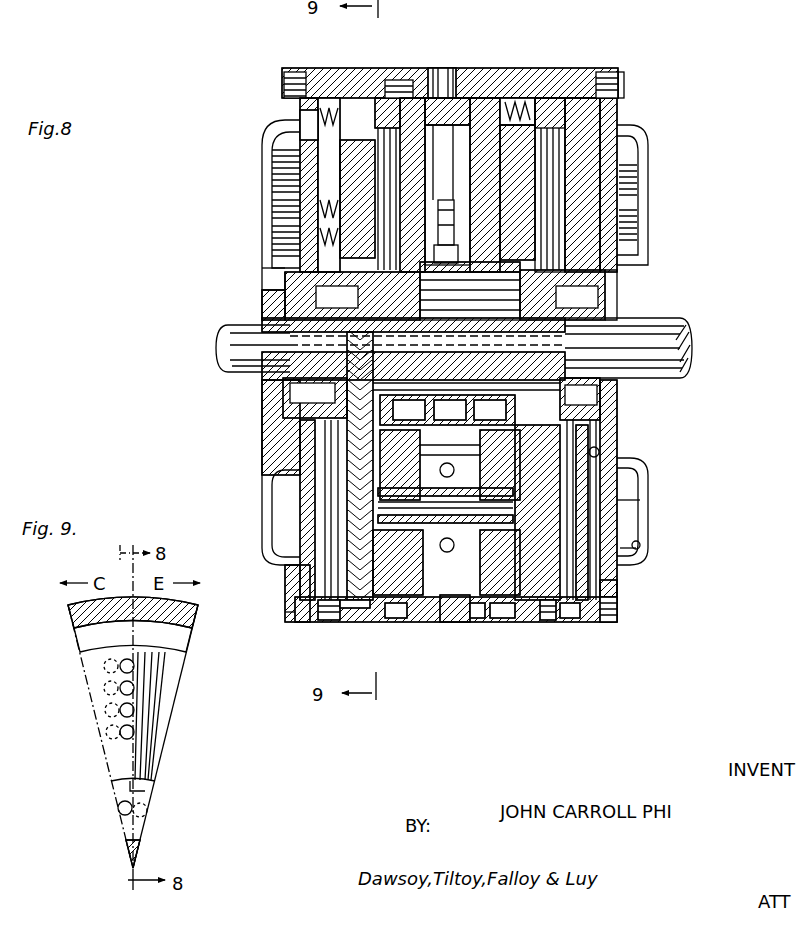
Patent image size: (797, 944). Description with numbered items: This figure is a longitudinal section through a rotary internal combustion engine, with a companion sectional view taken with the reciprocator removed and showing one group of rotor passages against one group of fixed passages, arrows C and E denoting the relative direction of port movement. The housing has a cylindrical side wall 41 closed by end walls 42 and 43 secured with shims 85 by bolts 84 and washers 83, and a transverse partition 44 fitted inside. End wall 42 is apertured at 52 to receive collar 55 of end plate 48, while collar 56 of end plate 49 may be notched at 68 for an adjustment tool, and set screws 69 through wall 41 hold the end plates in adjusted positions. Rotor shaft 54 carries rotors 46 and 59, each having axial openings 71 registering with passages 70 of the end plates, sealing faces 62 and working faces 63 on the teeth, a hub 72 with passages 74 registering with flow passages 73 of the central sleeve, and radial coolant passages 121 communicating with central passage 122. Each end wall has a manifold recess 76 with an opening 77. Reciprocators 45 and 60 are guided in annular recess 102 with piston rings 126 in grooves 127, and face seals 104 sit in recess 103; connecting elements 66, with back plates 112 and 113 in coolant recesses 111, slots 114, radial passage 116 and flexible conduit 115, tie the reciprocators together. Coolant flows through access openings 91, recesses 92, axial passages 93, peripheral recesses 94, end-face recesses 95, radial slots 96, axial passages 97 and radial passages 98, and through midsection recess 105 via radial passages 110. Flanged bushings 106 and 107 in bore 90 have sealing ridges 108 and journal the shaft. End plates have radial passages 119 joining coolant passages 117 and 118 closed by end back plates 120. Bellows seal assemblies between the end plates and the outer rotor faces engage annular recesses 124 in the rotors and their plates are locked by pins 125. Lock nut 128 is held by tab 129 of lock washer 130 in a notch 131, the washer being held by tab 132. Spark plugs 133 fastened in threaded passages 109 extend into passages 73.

In FIG. 8, the cylindrical side wall 41 is at (320, 82).
In FIG. 9, the cylindrical side wall 41 is at (72, 620).
In FIG. 8, the end wall 42 is at (650, 245).
In FIG. 8, the end wall 43 is at (272, 125).
In FIG. 8, the transverse partition 44 is at (482, 628).
In FIG. 8, the reciprocator 45 is at (530, 120).
In FIG. 8, the rotor 46 is at (570, 95).
In FIG. 8, the end plate 48 is at (615, 115).
In FIG. 8, the end plate 49 is at (310, 595).
In FIG. 8, the central aperture 52 is at (600, 290).
In FIG. 8, the rotor shaft 54 is at (700, 310).
In FIG. 9, the rotor shaft 54 is at (140, 845).
In FIG. 8, the collar portion 55 is at (630, 418).
In FIG. 8, the collar portion 56 is at (298, 440).
In FIG. 8, the rotor 59 is at (337, 96).
In FIG. 9, the rotor 59 is at (82, 650).
In FIG. 8, the reciprocator 60 is at (333, 120).
In FIG. 9, the sealing face 62 is at (105, 712).
In FIG. 9, the working face 63 is at (150, 702).
In FIG. 8, the connecting element 66 is at (470, 620).
In FIG. 8, the notch 68 is at (625, 412).
In FIG. 8, the set screw 69 is at (320, 612).
In FIG. 8, the axial passage 70 is at (298, 160).
In FIG. 9, the axial passage 70 is at (104, 682).
In FIG. 9, the axial opening 71 is at (134, 670).
In FIG. 9, the hub portion 72 is at (150, 785).
In FIG. 8, the flow passage 73 is at (467, 300).
In FIG. 9, the flow passage 73 is at (150, 815).
In FIG. 9, the hub passage 74 is at (118, 810).
In FIG. 8, the annular recess 76 is at (645, 545).
In FIG. 8, the opening 77 is at (645, 512).
In FIG. 8, the washer 83 is at (612, 73).
In FIG. 8, the bolt 84 is at (620, 95).
In FIG. 8, the shim 85 is at (618, 620).
In FIG. 8, the bore 90 is at (447, 390).
In FIG. 8, the central radial access opening 91 is at (472, 72).
In FIG. 8, the annular coolant recess 92 is at (375, 98).
In FIG. 8, the axial passage 93 is at (565, 625).
In FIG. 8, the peripheral annular coolant recess 94 is at (412, 97).
In FIG. 8, the annular coolant recess 95 is at (409, 410).
In FIG. 8, the radial slot 96 is at (490, 410).
In FIG. 8, the axial passage 97 is at (450, 410).
In FIG. 8, the radial passage 98 is at (490, 120).
In FIG. 8, the annular recess 102 is at (405, 625).
In FIG. 8, the annular recess 103 is at (370, 625).
In FIG. 8, the face seal 104 is at (340, 625).
In FIG. 8, the annular recess 105 is at (462, 95).
In FIG. 8, the flanged bushing 106 is at (543, 300).
In FIG. 8, the flanged bushing 107 is at (372, 298).
In FIG. 8, the annular ridge 108 is at (503, 392).
In FIG. 8, the radial threaded passage 109 is at (456, 262).
In FIG. 8, the radial passage 110 is at (450, 465).
In FIG. 8, the annular coolant recess 111 is at (545, 165).
In FIG. 8, the left annular back plate 112 is at (397, 150).
In FIG. 8, the right annular back plate 113 is at (530, 138).
In FIG. 8, the slot 114 is at (457, 608).
In FIG. 8, the flexible conduit 115 is at (477, 562).
In FIG. 8, the radial passage 116 is at (420, 562).
In FIG. 8, the inner annular coolant passage 117 is at (625, 452).
In FIG. 8, the outer annular coolant passage 118 is at (318, 120).
In FIG. 8, the radial coolant passage 119 is at (648, 560).
In FIG. 8, the end back plate 120 is at (640, 488).
In FIG. 8, the radial coolant passage 121 is at (345, 395).
In FIG. 8, the central passage 122 is at (272, 358).
In FIG. 8, the annular recess 124 is at (620, 588).
In FIG. 8, the pin 125 is at (325, 230).
In FIG. 8, the piston ring 126 is at (510, 628).
In FIG. 8, the groove 127 is at (559, 489).
In FIG. 8, the threaded lock nut 128 is at (268, 407).
In FIG. 8, the tab 129 is at (265, 290).
In FIG. 8, the lock washer 130 is at (300, 415).
In FIG. 8, the notch 131 is at (262, 270).
In FIG. 8, the tab 132 is at (268, 318).
In FIG. 8, the spark plug 133 is at (450, 162).